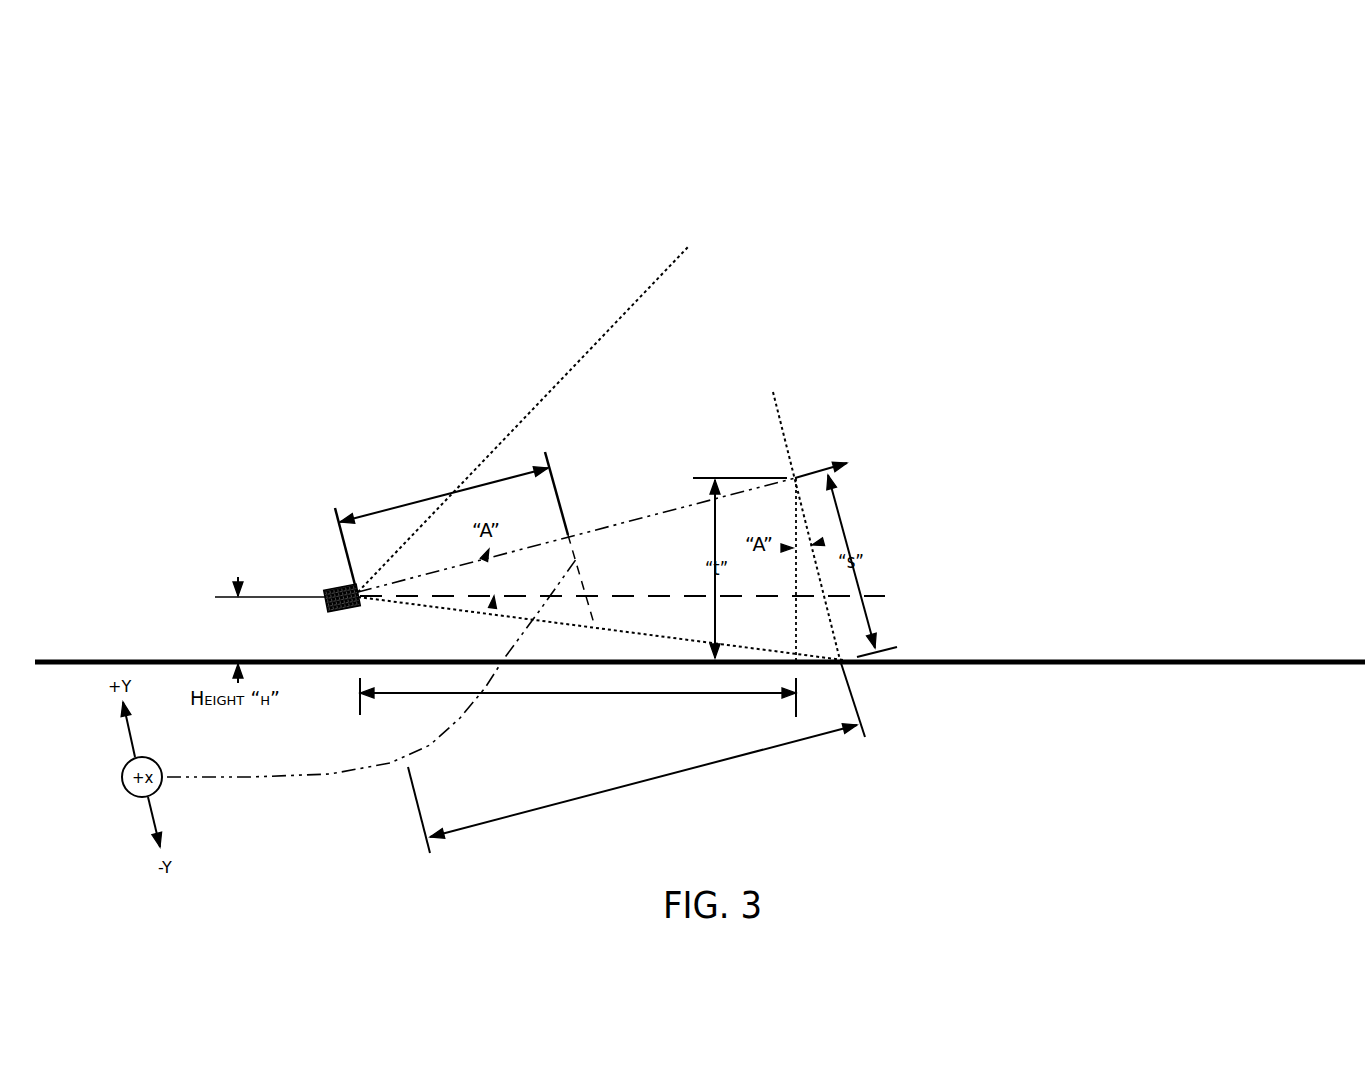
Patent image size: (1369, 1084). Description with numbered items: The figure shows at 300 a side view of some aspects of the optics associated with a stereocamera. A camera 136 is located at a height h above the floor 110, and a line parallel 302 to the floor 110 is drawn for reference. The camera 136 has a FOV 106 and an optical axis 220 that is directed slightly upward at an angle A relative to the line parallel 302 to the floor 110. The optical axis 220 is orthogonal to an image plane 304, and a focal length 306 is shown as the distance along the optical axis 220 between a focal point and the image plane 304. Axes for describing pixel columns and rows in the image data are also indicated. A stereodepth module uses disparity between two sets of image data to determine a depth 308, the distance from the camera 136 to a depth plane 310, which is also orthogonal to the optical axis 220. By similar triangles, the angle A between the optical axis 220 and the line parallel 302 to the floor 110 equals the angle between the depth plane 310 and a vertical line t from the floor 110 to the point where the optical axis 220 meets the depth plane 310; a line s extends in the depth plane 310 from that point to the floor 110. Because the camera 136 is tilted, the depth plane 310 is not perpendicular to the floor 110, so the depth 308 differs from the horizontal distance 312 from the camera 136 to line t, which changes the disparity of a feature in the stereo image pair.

The optics illustration 300 is at (1251, 99).
The FOV 106 is at (547, 407).
The floor 110 is at (700, 699).
The camera 136 is at (247, 505).
The optical axis 220 is at (661, 515).
The line parallel to the floor 302 is at (635, 599).
The image plane 304 is at (663, 468).
The focal length 306 is at (441, 512).
The depth 308 is at (632, 788).
The depth plane 310 is at (889, 489).
The horizontal distance 312 is at (578, 692).